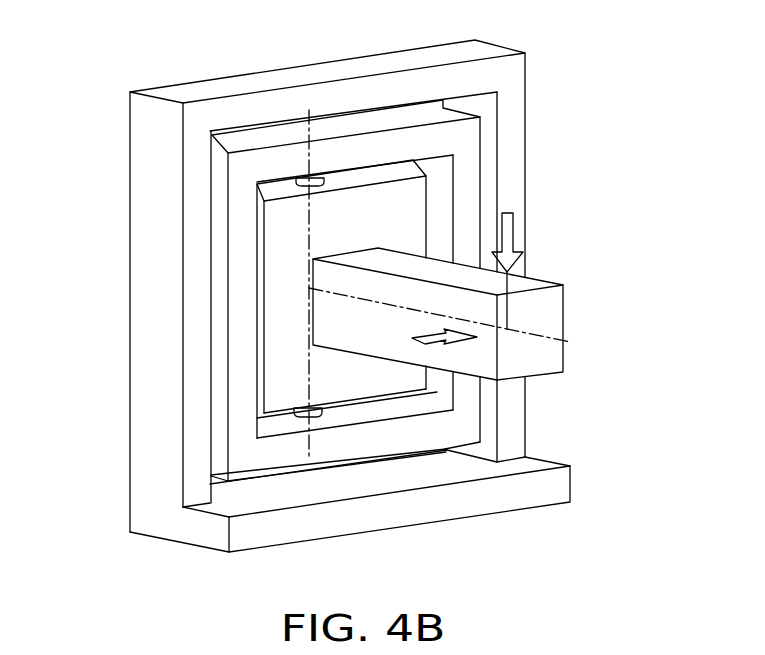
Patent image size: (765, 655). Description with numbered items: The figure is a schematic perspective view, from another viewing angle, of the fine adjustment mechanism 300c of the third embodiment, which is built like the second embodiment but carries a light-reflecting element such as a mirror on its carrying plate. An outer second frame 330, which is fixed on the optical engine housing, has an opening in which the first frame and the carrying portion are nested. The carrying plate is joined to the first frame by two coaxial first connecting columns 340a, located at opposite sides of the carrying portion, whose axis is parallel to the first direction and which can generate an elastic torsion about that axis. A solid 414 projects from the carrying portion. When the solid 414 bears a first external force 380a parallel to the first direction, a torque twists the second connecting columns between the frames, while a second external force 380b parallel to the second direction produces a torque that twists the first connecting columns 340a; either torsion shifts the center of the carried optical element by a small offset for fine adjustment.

The fine adjustment mechanism 300c is at (381, 303).
The second frame 330 is at (135, 468).
The first connecting columns 340a is at (310, 177).
The first external force 380a is at (513, 230).
The second external force 380b is at (450, 343).
The solid 414 is at (532, 283).